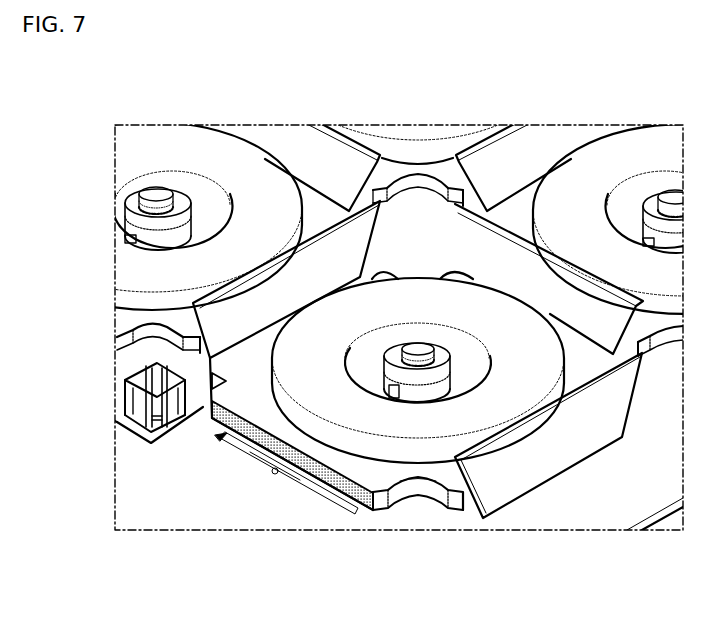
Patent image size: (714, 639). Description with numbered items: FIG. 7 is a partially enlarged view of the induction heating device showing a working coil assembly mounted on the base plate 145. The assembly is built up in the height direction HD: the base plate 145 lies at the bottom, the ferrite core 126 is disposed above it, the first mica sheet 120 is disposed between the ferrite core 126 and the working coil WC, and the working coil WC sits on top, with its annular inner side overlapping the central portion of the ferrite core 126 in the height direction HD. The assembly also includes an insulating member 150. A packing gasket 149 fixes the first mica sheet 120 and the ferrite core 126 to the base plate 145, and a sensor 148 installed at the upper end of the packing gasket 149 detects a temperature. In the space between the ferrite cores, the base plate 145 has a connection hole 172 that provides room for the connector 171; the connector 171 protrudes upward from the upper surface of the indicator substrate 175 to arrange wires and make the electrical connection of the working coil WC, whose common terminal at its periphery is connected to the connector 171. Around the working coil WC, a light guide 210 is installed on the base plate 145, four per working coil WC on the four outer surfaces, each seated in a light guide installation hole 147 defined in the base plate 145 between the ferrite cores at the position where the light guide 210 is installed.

The first mica sheet 120 is at (233, 430).
The ferrite core 126 is at (397, 497).
The base plate 145 is at (580, 503).
The light guide installation hole 147 is at (275, 474).
The sensor 148 is at (433, 345).
The packing gasket 149 is at (441, 373).
The insulating member 150 is at (328, 478).
The connector 171 is at (175, 410).
The connection hole 172 is at (125, 382).
The indicator substrate 175 is at (203, 407).
The light guide 210 is at (507, 482).
The working coil WC is at (420, 432).
The height direction HD is at (258, 296).